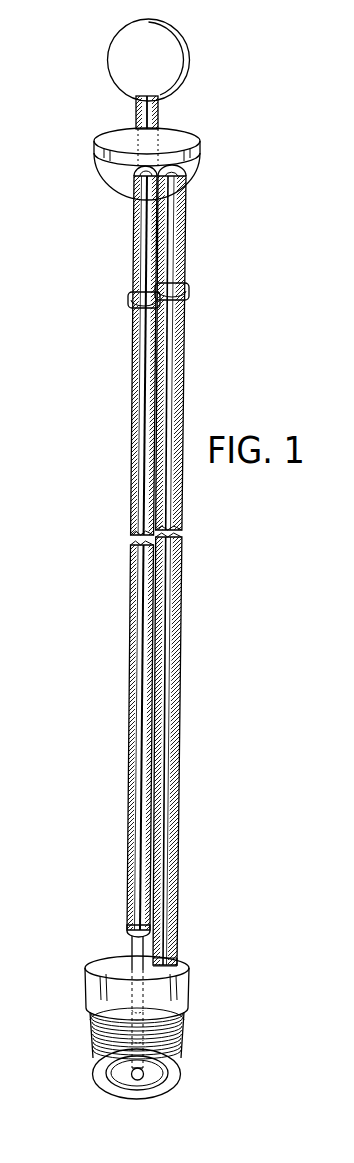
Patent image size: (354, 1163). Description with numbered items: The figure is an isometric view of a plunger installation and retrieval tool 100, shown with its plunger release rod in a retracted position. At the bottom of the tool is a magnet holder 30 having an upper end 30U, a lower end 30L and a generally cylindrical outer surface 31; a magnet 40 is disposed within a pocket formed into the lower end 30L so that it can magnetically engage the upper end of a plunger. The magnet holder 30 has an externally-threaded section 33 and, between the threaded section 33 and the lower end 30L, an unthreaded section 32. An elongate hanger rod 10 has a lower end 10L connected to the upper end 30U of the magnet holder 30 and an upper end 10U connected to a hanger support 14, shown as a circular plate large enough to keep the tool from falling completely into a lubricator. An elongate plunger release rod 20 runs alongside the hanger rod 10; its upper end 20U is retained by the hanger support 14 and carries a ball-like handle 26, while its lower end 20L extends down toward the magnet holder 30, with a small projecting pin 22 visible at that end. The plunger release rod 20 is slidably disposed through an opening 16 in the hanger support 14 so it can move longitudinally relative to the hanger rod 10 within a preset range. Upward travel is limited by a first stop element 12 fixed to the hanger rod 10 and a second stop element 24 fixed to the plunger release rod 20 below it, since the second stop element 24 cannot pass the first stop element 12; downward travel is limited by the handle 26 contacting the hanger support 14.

The plunger installation and retrieval tool 100 is at (207, 80).
The handle 26 is at (120, 52).
The upper end of plunger release rod 20U is at (133, 115).
The hanger support 14 is at (173, 136).
The opening 16 is at (135, 200).
The upper end of hanger rod 10U is at (188, 172).
The second stop element 24 is at (130, 300).
The first stop element 12 is at (190, 292).
The plunger release rod 20 is at (141, 505).
The hanger rod 10 is at (173, 590).
The lower end of plunger release rod 20L is at (128, 927).
The pin 22 is at (134, 952).
The lower end of hanger rod 10L is at (178, 968).
The upper end of magnet holder 30U is at (89, 973).
The cylindrical outer surface 31 is at (187, 990).
The magnet holder 30 is at (190, 1007).
The threaded section 33 is at (85, 1028).
The unthreaded section 32 is at (178, 1058).
The lower end of magnet holder 30L is at (92, 1073).
The magnet 40 is at (150, 1088).